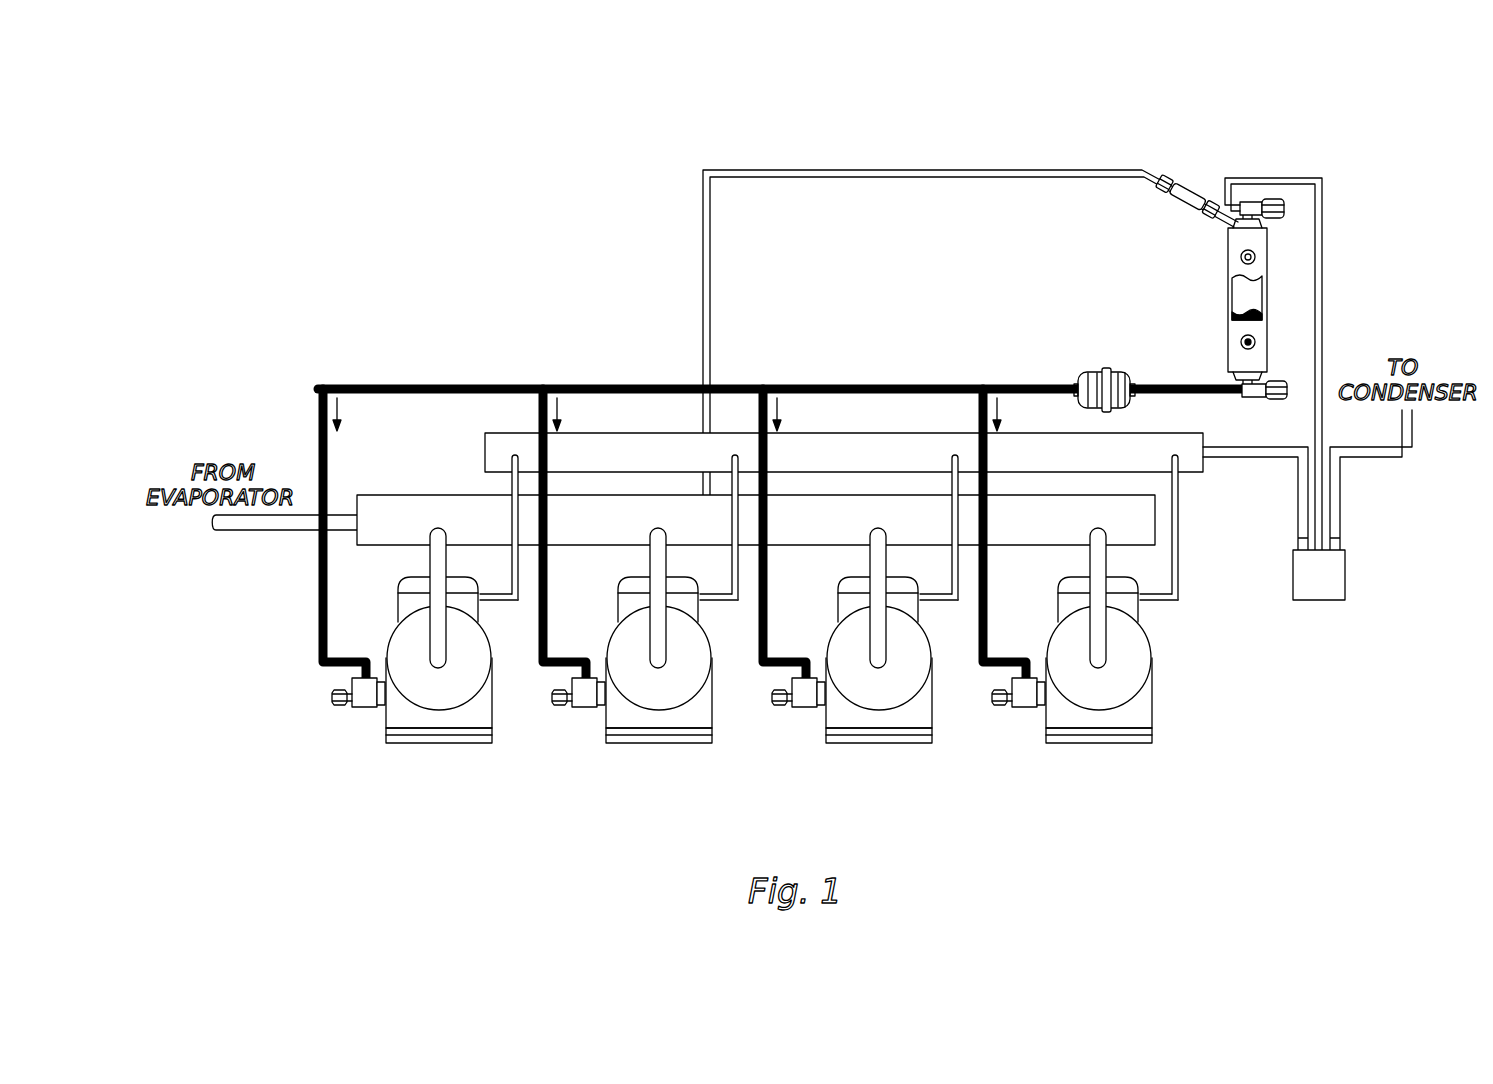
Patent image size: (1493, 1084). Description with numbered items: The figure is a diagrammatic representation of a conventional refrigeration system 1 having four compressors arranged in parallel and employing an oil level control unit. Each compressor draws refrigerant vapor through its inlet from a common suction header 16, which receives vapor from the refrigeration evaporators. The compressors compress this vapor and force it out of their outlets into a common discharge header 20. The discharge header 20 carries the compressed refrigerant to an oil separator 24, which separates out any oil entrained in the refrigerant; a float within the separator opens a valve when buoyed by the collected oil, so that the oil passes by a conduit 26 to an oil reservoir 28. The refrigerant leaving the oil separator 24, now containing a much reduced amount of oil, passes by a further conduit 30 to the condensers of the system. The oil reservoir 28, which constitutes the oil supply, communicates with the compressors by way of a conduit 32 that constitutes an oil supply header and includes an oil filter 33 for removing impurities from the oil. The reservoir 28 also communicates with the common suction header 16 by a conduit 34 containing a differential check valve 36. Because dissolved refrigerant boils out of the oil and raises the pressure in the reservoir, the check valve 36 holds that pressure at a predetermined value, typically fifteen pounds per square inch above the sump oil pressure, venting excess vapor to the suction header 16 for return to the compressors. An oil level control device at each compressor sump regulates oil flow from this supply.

The refrigeration system 1 is at (628, 186).
The common suction header 16 is at (394, 495).
The common discharge header 20 is at (822, 435).
The oil separator 24 is at (1350, 577).
The conduit 26 is at (1324, 280).
The oil reservoir 28 is at (1225, 262).
The conduit 30 is at (1368, 458).
The conduit 32 is at (748, 362).
The oil filter 33 is at (1118, 372).
The conduit 34 is at (898, 168).
The differential check valve 36 is at (1197, 195).